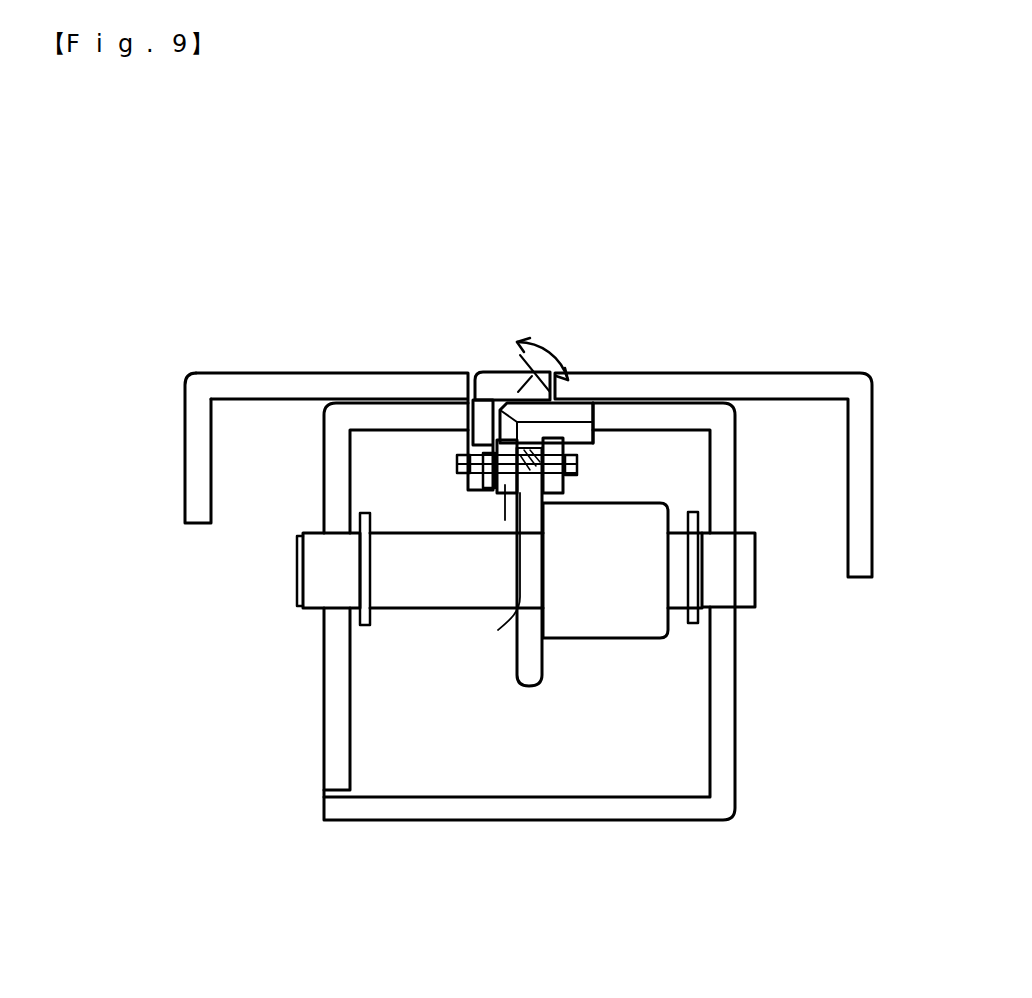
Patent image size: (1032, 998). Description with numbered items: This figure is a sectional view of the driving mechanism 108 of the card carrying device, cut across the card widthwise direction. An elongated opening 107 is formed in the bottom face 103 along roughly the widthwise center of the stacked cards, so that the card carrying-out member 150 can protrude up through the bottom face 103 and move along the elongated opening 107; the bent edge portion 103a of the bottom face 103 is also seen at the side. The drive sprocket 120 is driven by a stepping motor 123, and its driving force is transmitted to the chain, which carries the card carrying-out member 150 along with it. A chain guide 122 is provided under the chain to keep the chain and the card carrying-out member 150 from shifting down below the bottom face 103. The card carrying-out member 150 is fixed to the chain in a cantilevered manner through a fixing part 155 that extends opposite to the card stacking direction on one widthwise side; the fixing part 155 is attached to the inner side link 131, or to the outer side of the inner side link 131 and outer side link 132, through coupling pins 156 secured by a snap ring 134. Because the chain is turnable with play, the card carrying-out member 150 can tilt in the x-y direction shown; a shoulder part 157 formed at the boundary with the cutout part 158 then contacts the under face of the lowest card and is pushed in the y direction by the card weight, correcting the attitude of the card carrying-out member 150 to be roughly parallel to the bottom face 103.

The driving mechanism 108 is at (752, 272).
The bottom face 103 is at (333, 374).
The bent portion of bracket 103a is at (210, 388).
The elongated opening 107 is at (522, 360).
The shoulder part 157 is at (517, 342).
The card carrying-out member 150 is at (548, 380).
The chain guide 122 is at (585, 432).
The snap ring 134 is at (360, 604).
The outer side link 132 is at (580, 495).
The stepping motor 123 is at (643, 625).
The drive sprocket 120 is at (532, 653).
The inner side link 131 is at (493, 492).
The fixing part 155 is at (475, 440).
The coupling pin 156 is at (460, 473).
The cutout part 158 is at (485, 447).